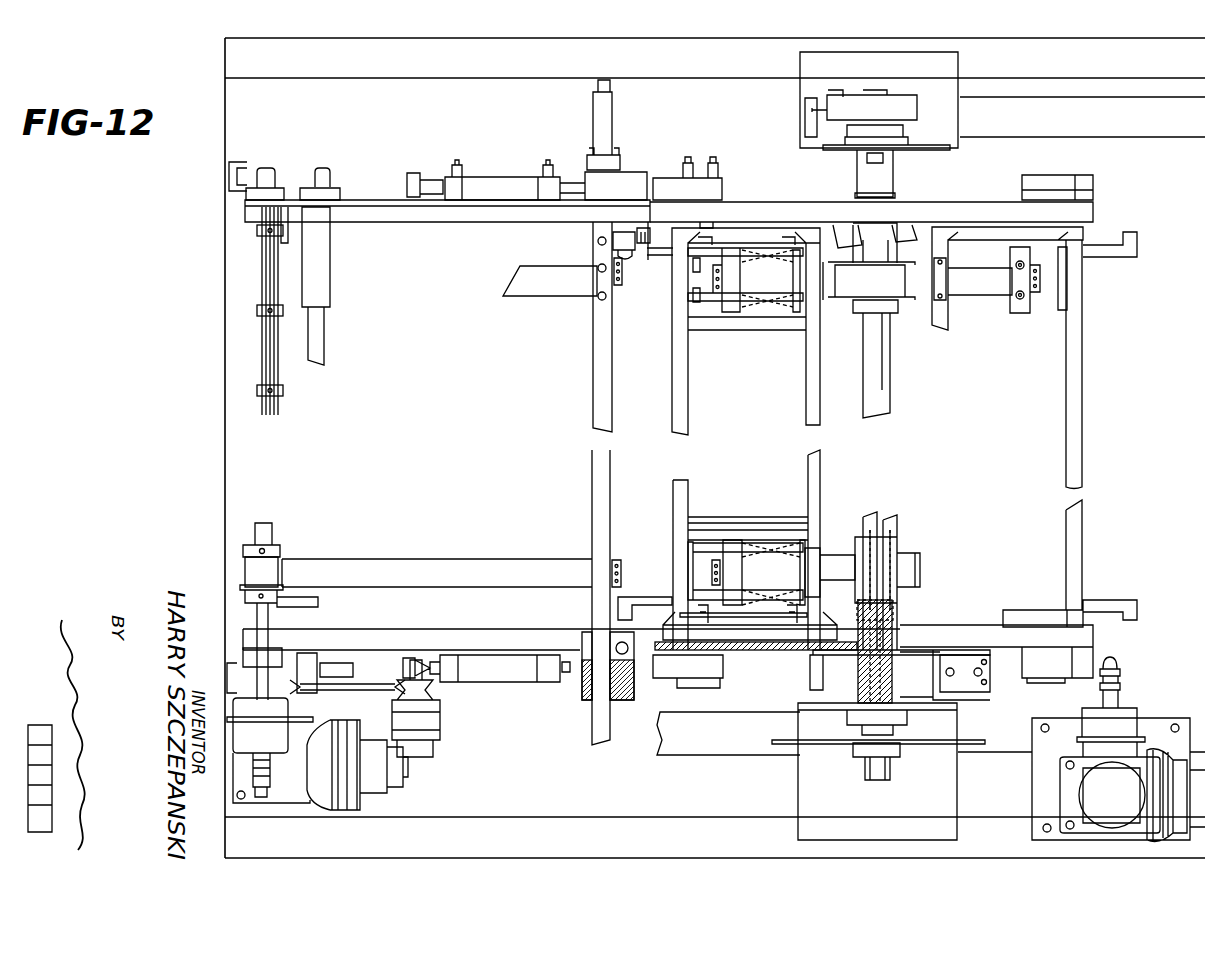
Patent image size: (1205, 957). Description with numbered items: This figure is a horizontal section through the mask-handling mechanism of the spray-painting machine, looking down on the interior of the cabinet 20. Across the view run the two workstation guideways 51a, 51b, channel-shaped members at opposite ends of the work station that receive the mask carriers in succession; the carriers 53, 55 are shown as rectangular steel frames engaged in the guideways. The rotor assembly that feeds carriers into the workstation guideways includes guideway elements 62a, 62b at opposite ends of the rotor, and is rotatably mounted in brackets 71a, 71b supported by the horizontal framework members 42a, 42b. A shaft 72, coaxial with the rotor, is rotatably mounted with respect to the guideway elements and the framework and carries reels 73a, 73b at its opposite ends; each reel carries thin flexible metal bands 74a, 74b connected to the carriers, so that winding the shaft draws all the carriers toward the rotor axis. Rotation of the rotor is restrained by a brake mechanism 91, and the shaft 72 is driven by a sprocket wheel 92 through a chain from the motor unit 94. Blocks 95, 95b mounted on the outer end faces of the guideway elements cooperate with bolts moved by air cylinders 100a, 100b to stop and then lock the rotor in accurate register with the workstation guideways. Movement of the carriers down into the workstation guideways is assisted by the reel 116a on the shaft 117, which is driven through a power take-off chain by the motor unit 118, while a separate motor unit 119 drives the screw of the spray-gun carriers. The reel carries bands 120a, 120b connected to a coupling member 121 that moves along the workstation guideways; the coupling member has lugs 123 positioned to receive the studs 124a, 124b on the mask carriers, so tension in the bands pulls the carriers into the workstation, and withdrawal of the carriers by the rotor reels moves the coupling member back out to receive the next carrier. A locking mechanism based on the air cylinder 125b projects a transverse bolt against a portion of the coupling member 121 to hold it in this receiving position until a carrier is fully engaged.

The cabinet 20 is at (230, 413).
The workstation guideway 51b is at (427, 225).
The guideway element 62b is at (755, 208).
The air cylinder 100b is at (502, 177).
The air cylinder 125b is at (612, 110).
The block 95b is at (668, 178).
The coupling member 121 is at (593, 388).
The stud 124b is at (628, 242).
The lug 123 is at (646, 253).
The band 120b is at (530, 297).
The mask carrier 53 is at (687, 423).
The reel 73b is at (853, 288).
The shaft 72 is at (888, 414).
The bracket 71b is at (948, 152).
The horizontal member 42b is at (1159, 138).
The band 74b is at (987, 285).
The mask carrier 55 is at (1065, 421).
The band 120a is at (525, 562).
The shaft 117 is at (273, 533).
The reel 116a is at (275, 572).
The workstation guideway 51a is at (413, 637).
The guideway element 62a is at (766, 650).
The stud 124a is at (628, 605).
The band 74a is at (833, 557).
The reel 73a is at (910, 568).
The brake mechanism 91 is at (948, 664).
The air cylinder 100a is at (520, 667).
The motor unit 119 is at (433, 727).
The motor unit 118 is at (387, 793).
The block 95 is at (688, 683).
The horizontal member 42a is at (707, 755).
The bracket 71a is at (937, 803).
The sprocket wheel 92 is at (827, 746).
The motor unit 94 is at (1122, 806).